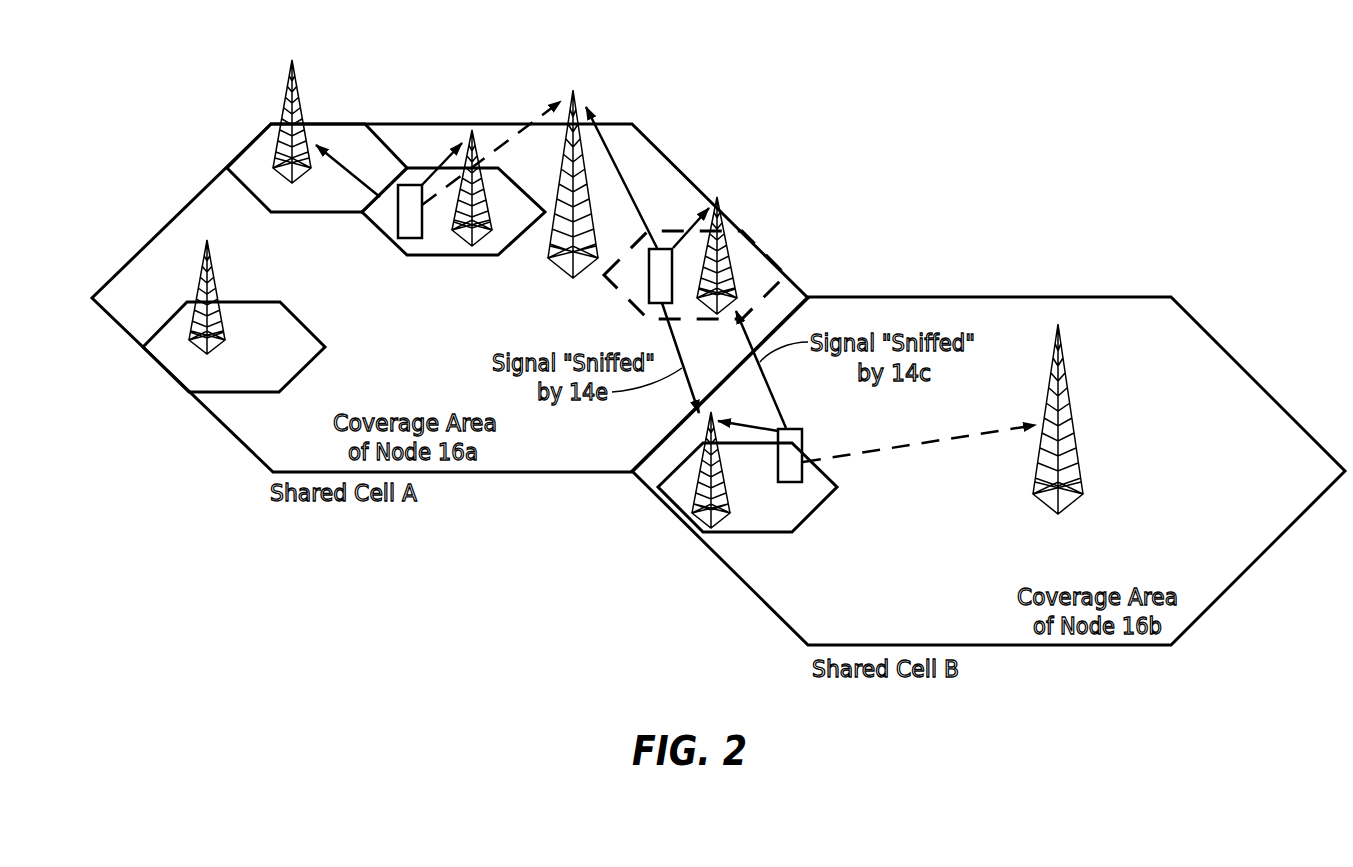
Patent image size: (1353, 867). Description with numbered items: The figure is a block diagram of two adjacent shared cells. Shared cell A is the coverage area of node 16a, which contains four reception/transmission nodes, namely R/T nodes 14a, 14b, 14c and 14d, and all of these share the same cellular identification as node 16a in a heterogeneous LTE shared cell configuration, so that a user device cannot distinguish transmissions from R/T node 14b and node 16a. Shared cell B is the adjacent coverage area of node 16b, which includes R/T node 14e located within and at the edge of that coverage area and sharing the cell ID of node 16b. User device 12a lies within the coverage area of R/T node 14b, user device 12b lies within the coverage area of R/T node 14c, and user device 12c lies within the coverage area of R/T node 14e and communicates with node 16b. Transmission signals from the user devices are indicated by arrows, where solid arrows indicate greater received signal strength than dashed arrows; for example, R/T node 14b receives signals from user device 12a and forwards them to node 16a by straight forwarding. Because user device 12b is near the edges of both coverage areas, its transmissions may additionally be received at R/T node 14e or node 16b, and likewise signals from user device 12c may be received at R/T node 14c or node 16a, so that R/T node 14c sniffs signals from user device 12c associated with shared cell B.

The user device 12a is at (398, 221).
The user device 12b is at (649, 281).
The user device 12c is at (802, 433).
The reception/transmission node 14a is at (283, 103).
The reception/transmission node 14b is at (460, 240).
The reception/transmission node 14c is at (718, 203).
The reception/transmission node 14d is at (200, 280).
The reception/transmission node 14e is at (722, 518).
The node 16a is at (572, 90).
The node 16b is at (1066, 373).